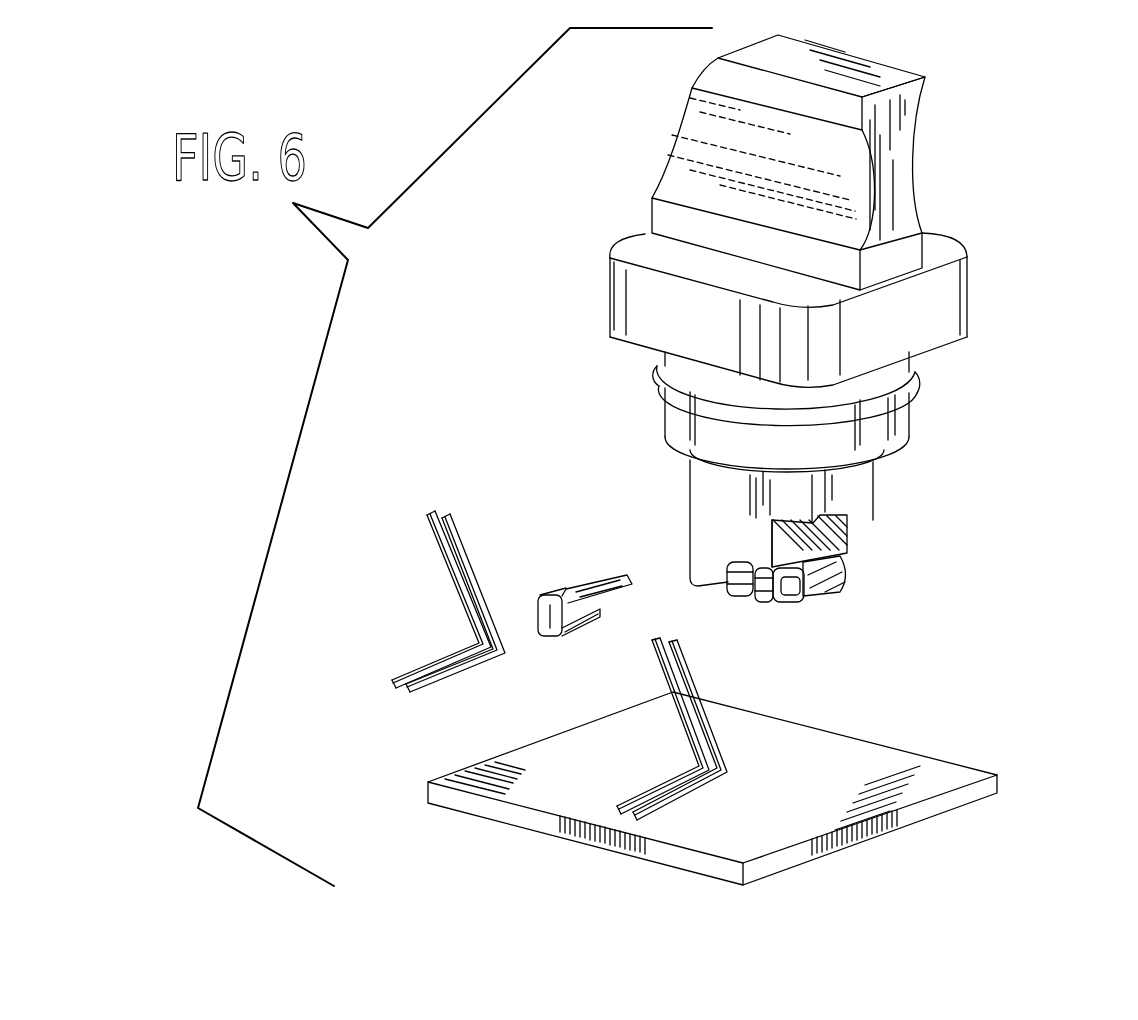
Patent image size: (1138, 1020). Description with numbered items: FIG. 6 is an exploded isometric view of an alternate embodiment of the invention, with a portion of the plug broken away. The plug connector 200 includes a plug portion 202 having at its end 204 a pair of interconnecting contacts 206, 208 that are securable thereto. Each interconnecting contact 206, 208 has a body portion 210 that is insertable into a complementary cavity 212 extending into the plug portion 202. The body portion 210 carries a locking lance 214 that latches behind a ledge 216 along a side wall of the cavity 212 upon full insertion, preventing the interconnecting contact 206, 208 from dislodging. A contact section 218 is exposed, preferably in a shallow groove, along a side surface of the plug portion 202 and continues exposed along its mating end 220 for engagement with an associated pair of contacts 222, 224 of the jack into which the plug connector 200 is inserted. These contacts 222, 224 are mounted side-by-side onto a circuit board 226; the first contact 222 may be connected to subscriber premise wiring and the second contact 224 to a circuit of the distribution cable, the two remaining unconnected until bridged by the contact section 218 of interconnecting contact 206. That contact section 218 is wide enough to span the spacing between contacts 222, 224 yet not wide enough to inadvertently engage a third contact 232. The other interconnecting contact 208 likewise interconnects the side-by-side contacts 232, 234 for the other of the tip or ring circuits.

The plug connector 200 is at (995, 175).
The plug portion 202 is at (843, 492).
The end 204 is at (840, 585).
The interconnecting contact 206 is at (578, 576).
The interconnecting contact 208 is at (824, 593).
The body portion 210 is at (577, 590).
The cavity 212 is at (727, 572).
The locking lance 214 is at (597, 612).
The ledge 216 is at (797, 598).
The contact section 218 is at (542, 618).
The mating end 220 is at (713, 593).
The first contact 222 is at (418, 662).
The second contact 224 is at (425, 682).
The circuit board 226 is at (712, 788).
The contact 232 is at (690, 753).
The contact 234 is at (728, 737).